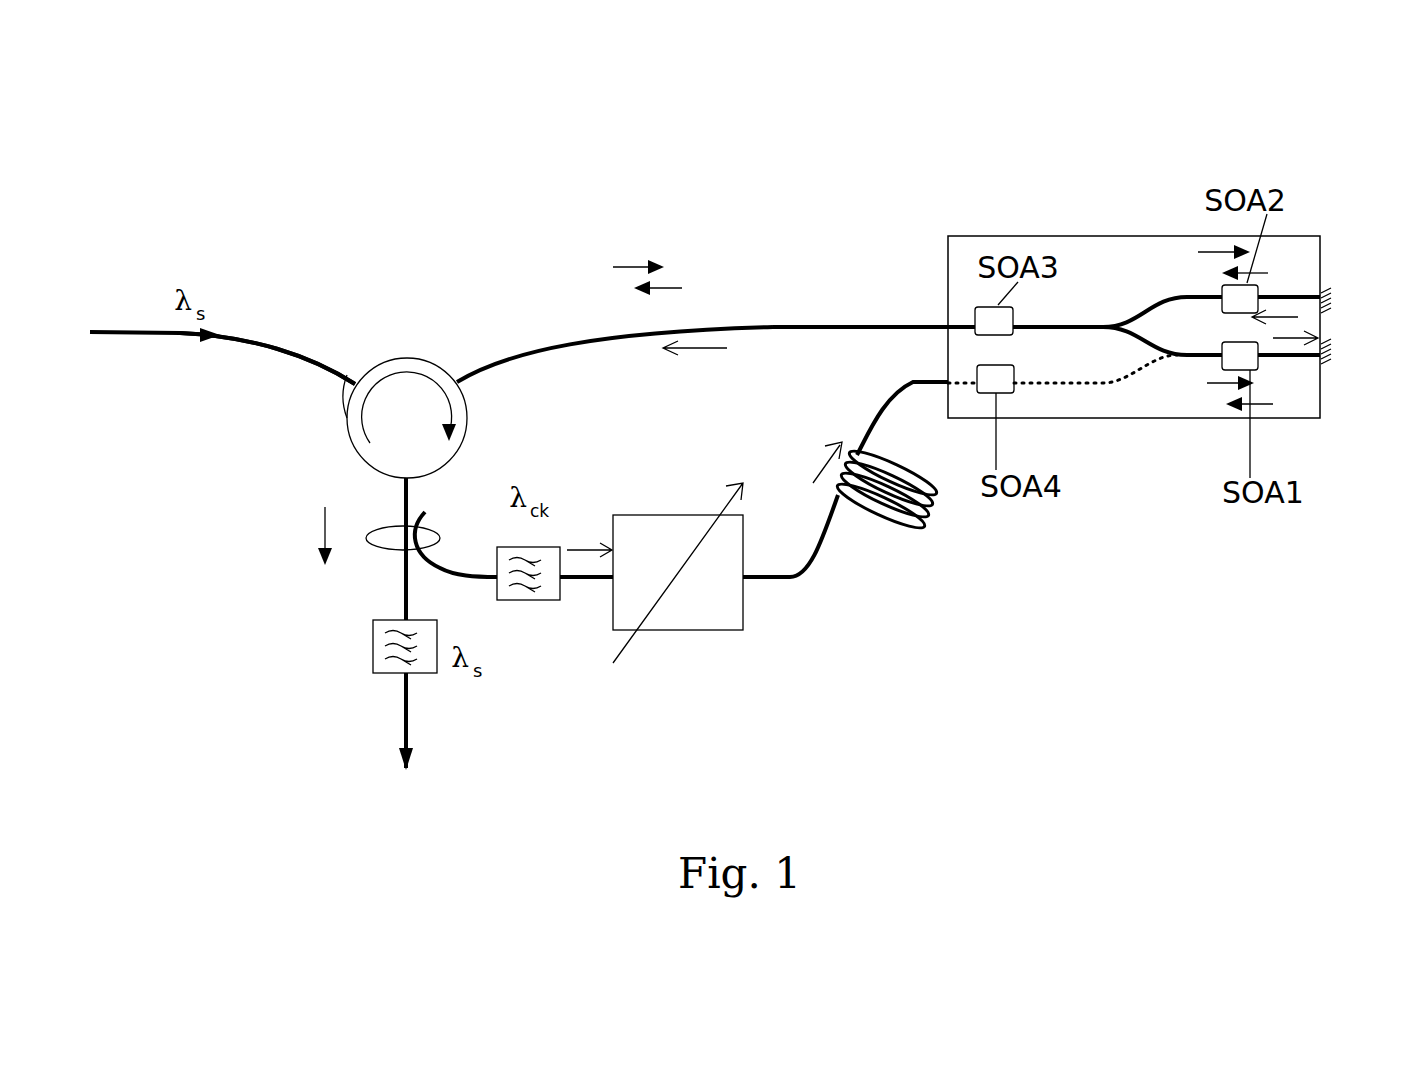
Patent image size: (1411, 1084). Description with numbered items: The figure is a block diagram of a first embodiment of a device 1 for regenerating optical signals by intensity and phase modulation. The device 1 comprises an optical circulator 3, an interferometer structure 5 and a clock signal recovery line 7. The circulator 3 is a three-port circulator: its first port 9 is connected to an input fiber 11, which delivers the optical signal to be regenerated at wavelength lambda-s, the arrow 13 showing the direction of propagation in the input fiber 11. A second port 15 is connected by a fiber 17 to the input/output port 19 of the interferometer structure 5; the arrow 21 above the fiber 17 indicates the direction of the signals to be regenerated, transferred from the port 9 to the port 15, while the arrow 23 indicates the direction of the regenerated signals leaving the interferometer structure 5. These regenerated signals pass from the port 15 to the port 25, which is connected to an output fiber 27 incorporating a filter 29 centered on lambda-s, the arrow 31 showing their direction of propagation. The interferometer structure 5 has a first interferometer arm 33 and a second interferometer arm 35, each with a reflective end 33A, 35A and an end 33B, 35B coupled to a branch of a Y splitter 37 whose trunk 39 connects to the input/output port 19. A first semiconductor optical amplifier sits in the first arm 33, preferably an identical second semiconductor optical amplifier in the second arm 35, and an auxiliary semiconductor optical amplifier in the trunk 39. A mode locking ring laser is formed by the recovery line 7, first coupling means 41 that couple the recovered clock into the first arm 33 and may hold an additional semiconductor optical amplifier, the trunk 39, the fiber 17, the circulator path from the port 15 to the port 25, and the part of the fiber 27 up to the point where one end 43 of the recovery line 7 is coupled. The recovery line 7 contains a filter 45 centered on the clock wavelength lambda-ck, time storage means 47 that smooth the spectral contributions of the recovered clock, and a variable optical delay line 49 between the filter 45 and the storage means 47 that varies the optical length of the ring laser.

The device 1 is at (252, 268).
The optical circulator 3 is at (400, 358).
The interferometer structure 5 is at (1018, 196).
The clock signal recovery line 7 is at (818, 592).
The first port 9 is at (357, 380).
The input fiber 11 is at (287, 357).
The arrow 13 is at (193, 340).
The second port 15 is at (455, 383).
The fiber 17 is at (773, 327).
The input/output port 19 is at (947, 327).
The arrow 21 is at (637, 262).
The arrow 23 is at (685, 285).
The port 25 is at (400, 477).
The output fiber 27 is at (403, 712).
The filter 29 is at (372, 640).
The arrow 31 is at (322, 525).
The first interferometer arm 33 is at (1307, 357).
The reflective end 33A is at (1335, 355).
The end 33B is at (1123, 338).
The second interferometer arm 35 is at (1275, 297).
The reflective end 35A is at (1333, 305).
The end 35B is at (1138, 315).
The Y splitter 37 is at (1110, 327).
The trunk 39 is at (1063, 325).
The first coupling means 41 is at (1083, 386).
The end of the recovery line 43 is at (467, 489).
The filter 45 is at (510, 600).
The time storage means 47 is at (917, 527).
The variable optical delay line 49 is at (687, 630).